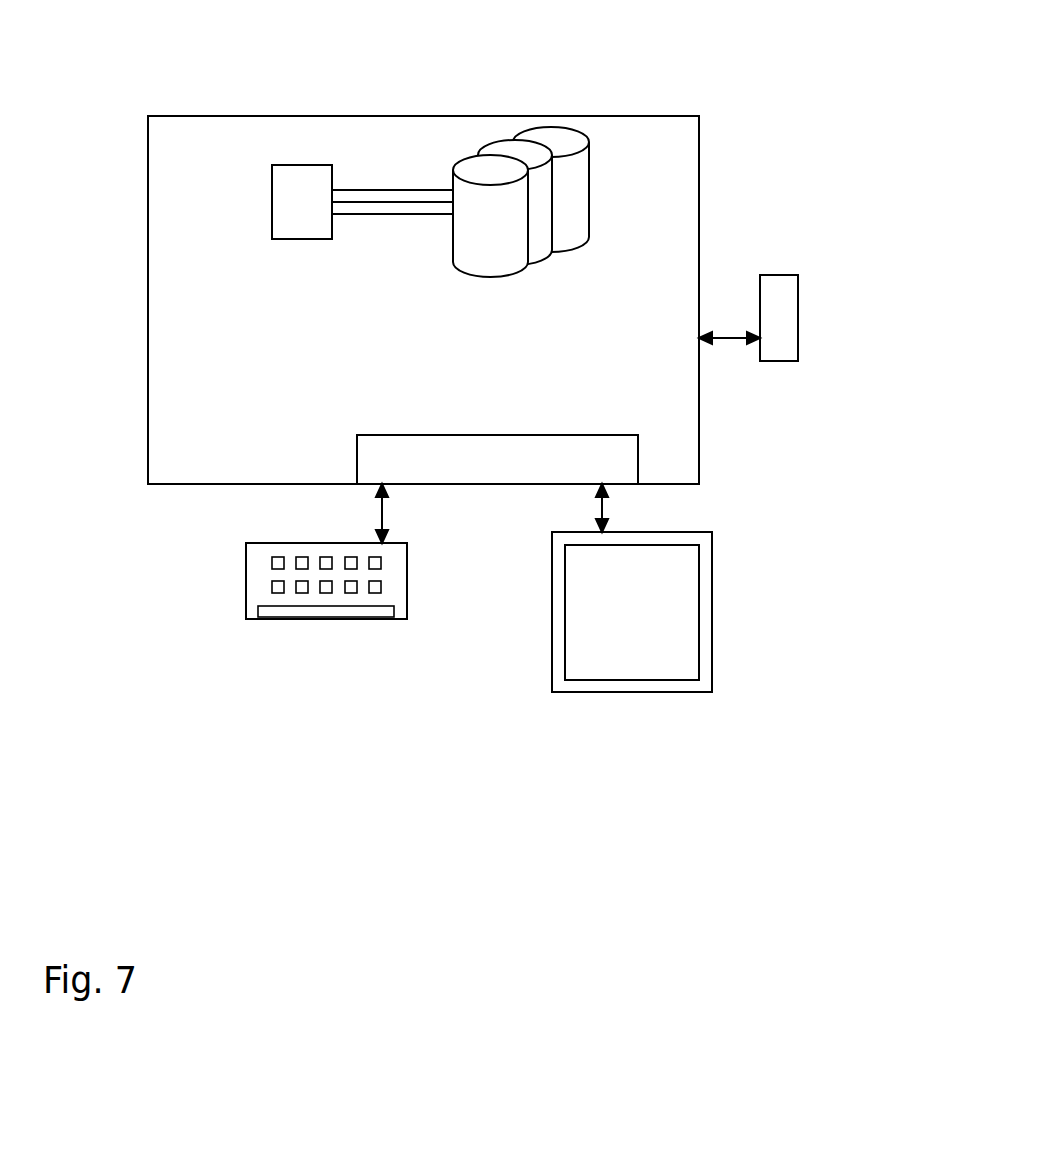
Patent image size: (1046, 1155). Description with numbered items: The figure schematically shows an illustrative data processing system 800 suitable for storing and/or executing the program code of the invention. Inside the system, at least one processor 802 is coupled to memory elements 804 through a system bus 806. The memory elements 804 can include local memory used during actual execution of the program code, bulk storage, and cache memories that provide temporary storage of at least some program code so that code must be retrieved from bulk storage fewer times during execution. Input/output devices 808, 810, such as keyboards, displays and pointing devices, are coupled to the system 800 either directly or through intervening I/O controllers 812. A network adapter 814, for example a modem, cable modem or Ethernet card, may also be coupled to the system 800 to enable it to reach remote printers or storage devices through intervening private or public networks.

The data processing system 800 is at (148, 233).
The processor 802 is at (322, 165).
The memory elements 804 is at (505, 140).
The system bus 806 is at (369, 190).
The input/output device 808 is at (408, 591).
The input/output device 810 is at (713, 592).
The I/O controller 812 is at (417, 435).
The network adapter 814 is at (798, 323).